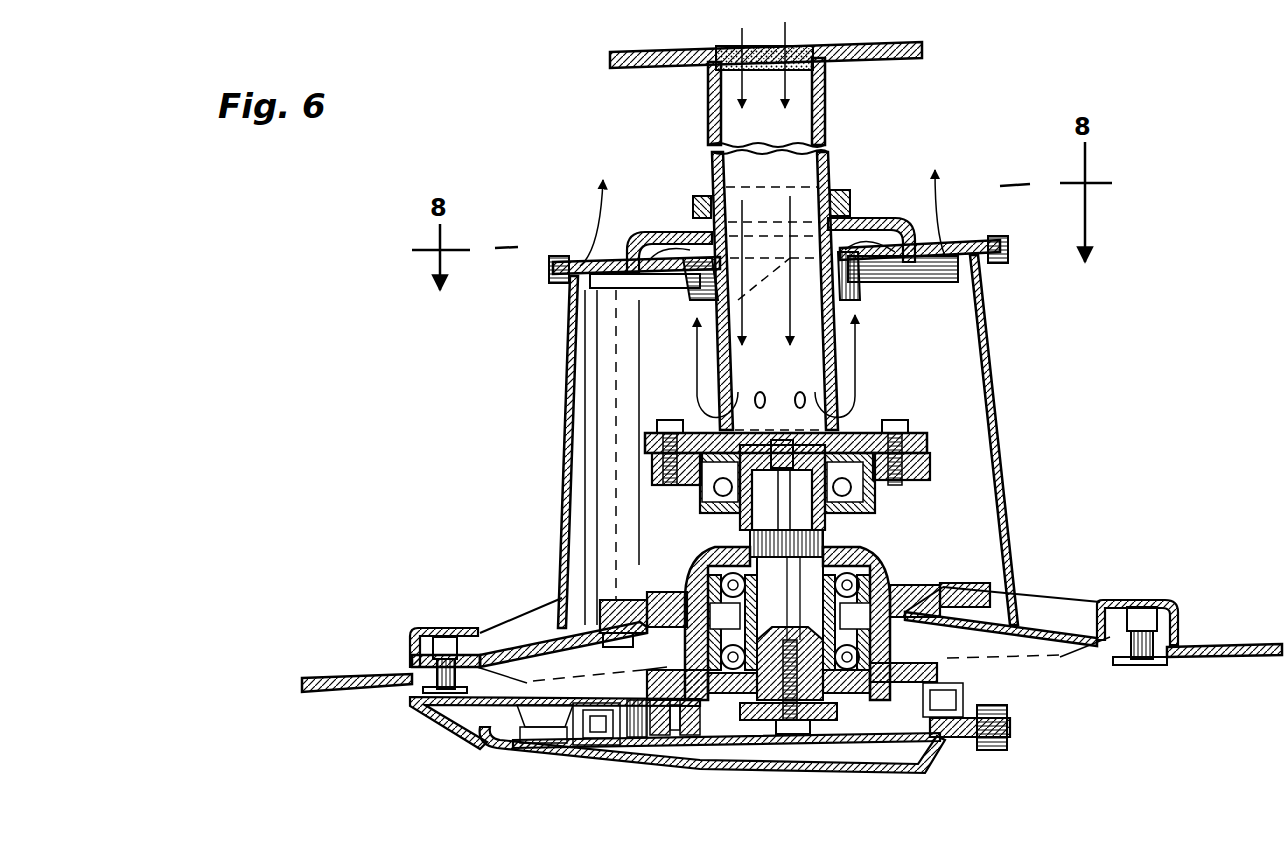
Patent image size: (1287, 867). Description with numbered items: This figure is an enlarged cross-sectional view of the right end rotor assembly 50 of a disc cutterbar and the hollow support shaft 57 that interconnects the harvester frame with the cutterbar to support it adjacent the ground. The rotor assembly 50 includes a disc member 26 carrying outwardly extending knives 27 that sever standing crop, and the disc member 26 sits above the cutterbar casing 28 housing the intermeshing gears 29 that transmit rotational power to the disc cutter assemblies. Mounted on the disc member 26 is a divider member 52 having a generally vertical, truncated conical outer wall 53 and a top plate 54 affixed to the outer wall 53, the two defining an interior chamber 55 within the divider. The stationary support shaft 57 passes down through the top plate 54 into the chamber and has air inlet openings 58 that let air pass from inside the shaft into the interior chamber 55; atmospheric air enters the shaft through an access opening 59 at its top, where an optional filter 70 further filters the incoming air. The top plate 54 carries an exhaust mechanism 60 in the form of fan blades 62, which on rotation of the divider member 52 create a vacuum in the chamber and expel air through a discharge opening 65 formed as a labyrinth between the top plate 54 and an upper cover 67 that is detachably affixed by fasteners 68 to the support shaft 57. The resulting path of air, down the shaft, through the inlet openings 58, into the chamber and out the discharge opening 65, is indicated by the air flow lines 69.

The disc member 26 is at (1040, 640).
The knives 27 is at (333, 678).
The cutterbar casing 28 is at (962, 683).
The intermeshing gears 29 is at (928, 720).
The right end rotor assembly 50 is at (1000, 102).
The divider member 52 is at (568, 366).
The outer wall 53 is at (565, 412).
The top plate 54 is at (612, 262).
The interior chamber 55 is at (632, 484).
The hollow support shaft 57 is at (830, 166).
The air inlet openings 58 is at (720, 405).
The access opening 59 is at (796, 48).
The exhaust mechanism 60 is at (572, 340).
The fan blades 62 is at (620, 288).
The discharge opening 65 is at (940, 238).
The upper cover 67 is at (672, 230).
The fasteners 68 is at (700, 196).
The air flow lines 69 is at (783, 125).
The filter 70 is at (730, 52).